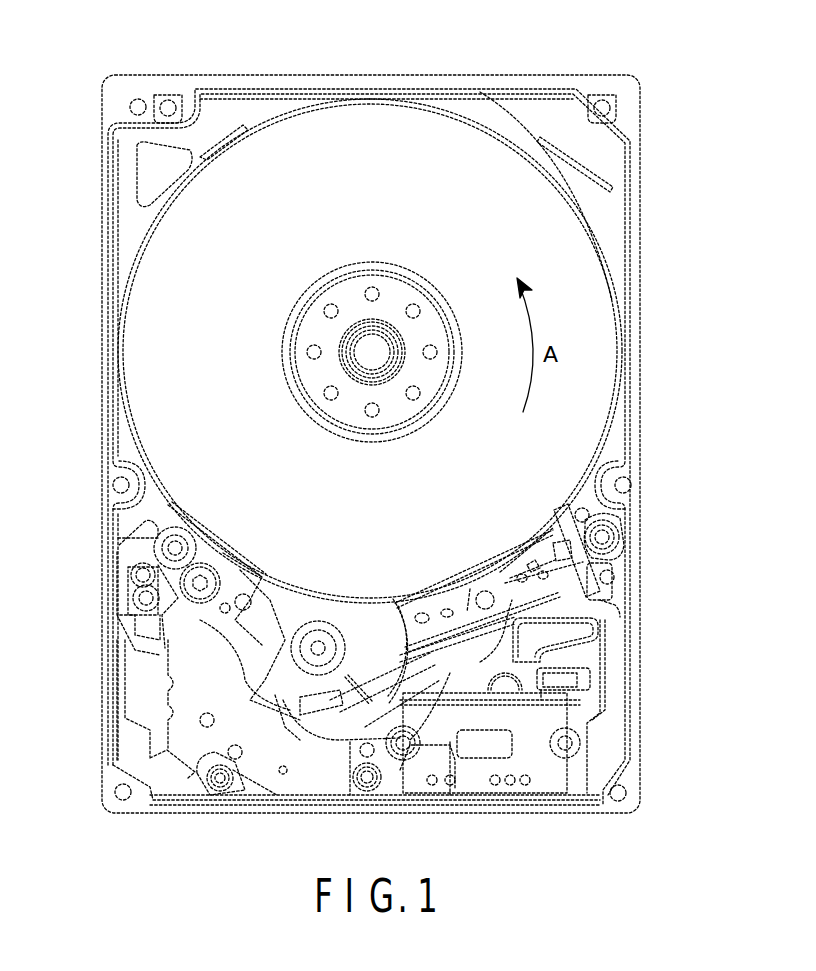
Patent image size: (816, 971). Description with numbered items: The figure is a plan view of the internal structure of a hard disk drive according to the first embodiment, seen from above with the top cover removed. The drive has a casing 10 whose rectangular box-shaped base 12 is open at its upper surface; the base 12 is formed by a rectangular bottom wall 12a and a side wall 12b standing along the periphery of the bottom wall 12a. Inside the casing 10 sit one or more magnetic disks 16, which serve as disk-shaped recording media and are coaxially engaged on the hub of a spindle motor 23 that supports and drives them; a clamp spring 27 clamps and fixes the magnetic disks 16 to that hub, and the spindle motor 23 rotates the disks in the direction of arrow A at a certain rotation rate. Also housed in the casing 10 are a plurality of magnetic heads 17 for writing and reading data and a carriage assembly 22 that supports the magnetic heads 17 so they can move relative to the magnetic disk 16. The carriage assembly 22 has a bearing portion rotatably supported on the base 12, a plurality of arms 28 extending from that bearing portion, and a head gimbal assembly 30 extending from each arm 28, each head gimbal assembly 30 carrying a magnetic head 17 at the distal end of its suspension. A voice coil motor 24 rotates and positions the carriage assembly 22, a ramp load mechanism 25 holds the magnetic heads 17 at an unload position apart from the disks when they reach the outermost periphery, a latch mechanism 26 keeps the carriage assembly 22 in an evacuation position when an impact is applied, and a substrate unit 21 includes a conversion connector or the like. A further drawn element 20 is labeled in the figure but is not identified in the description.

The casing 10 is at (373, 73).
The base 12 is at (646, 270).
The bottom wall 12a is at (606, 672).
The side wall 12b is at (265, 75).
The magnetic disk 16 is at (160, 277).
The magnetic head 17 is at (528, 564).
The fixing portion of housing 20 is at (497, 90).
The substrate unit 21 is at (540, 745).
The carriage assembly 22 is at (409, 600).
The spindle motor 23 is at (383, 350).
The voice coil motor 24 is at (305, 750).
The ramp load mechanism 25 is at (613, 550).
The latch mechanism 26 is at (150, 615).
The clamp spring 27 is at (292, 355).
The arm 28 is at (432, 598).
The head gimbal assembly 30 is at (525, 566).